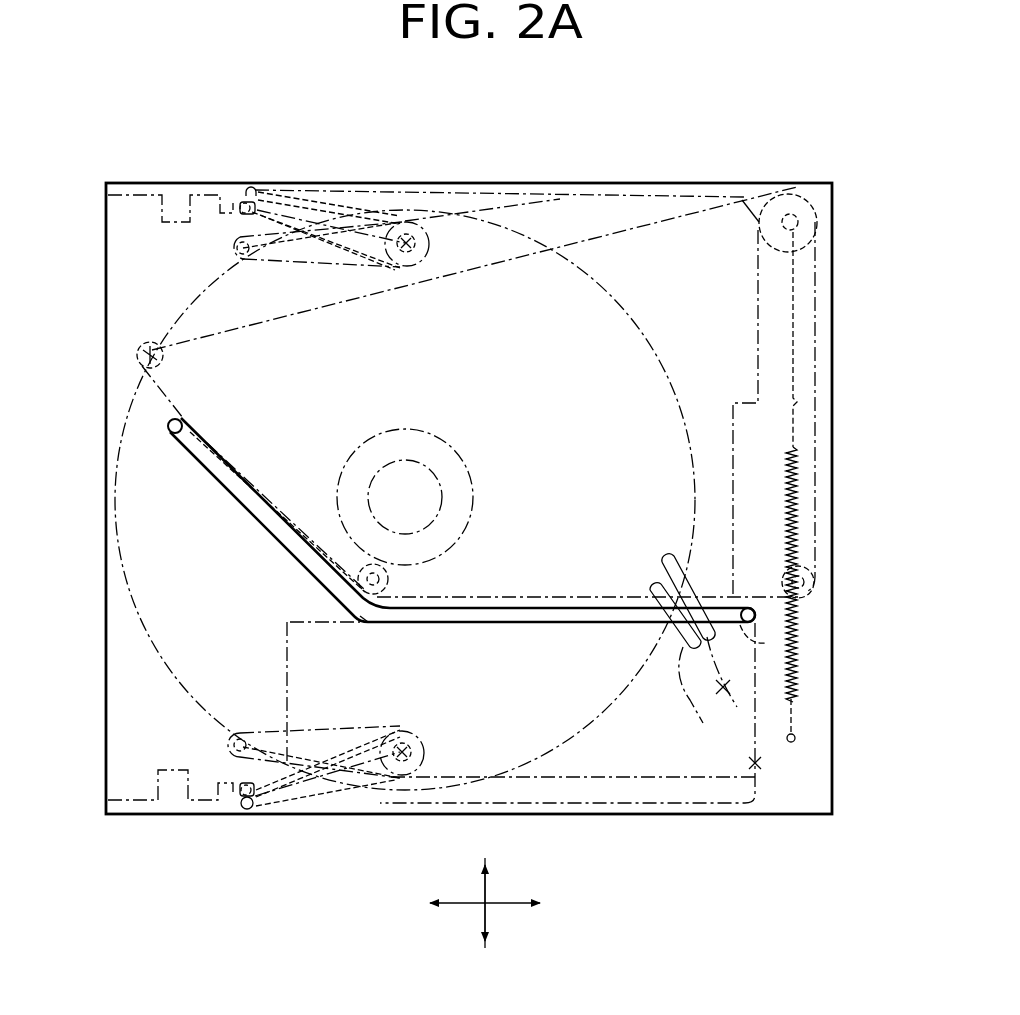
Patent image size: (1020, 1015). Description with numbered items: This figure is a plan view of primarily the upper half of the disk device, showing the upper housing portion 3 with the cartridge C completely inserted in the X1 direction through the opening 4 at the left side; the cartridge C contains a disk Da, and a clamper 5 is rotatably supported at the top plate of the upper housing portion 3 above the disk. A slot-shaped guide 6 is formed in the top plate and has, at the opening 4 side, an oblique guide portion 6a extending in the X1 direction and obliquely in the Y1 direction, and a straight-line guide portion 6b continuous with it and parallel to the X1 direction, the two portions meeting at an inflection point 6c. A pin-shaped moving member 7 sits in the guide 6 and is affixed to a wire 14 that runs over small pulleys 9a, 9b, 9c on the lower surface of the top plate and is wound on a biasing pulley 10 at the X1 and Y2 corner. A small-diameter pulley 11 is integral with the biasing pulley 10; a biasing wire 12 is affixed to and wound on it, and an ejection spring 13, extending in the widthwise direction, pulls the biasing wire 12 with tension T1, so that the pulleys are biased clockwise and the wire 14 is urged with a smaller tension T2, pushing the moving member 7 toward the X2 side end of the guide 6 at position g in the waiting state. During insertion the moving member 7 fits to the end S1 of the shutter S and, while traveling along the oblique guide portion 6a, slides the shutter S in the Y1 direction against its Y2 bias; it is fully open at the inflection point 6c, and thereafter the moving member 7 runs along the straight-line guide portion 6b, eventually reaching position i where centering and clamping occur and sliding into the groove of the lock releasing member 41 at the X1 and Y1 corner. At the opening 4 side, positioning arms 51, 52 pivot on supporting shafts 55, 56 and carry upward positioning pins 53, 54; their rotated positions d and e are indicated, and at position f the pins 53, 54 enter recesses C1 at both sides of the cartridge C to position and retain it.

The upper housing portion 3 is at (758, 816).
The opening 4 is at (98, 573).
The clamper 5 is at (465, 510).
The guide 6 is at (237, 505).
The oblique guide portion 6a is at (227, 479).
The straight-line guide portion 6b is at (550, 624).
The inflection point 6c is at (366, 624).
The moving member 7 is at (168, 426).
The small pulley 9a is at (137, 353).
The small pulley 9b is at (390, 580).
The small pulley 9c is at (812, 586).
The biasing pulley 10 is at (797, 190).
The small-diameter pulley 11 is at (800, 222).
The biasing wire 12 is at (793, 312).
The ejection spring 13 is at (796, 497).
The wire 14 is at (304, 312).
The lock releasing member 41 is at (728, 688).
The positioning arm 51 is at (290, 802).
The positioning arm 52 is at (292, 196).
The positioning pin 53 is at (248, 812).
The positioning pin 54 is at (256, 190).
The supporting shaft 55 is at (420, 748).
The supporting shaft 56 is at (410, 240).
The cartridge C is at (148, 806).
The recess C1 is at (232, 196).
The disk Da is at (537, 245).
The shutter S is at (752, 768).
The end of shutter S1 is at (765, 643).
The tension T1 is at (776, 335).
The tension T2 is at (680, 229).
The X1 direction X1 is at (503, 903).
The X2 direction X2 is at (402, 904).
The Y1 direction Y1 is at (482, 972).
The Y2 direction Y2 is at (482, 844).
The position d is at (356, 192).
The position e is at (288, 262).
The position f is at (243, 218).
The position g is at (182, 426).
The position i is at (707, 638).